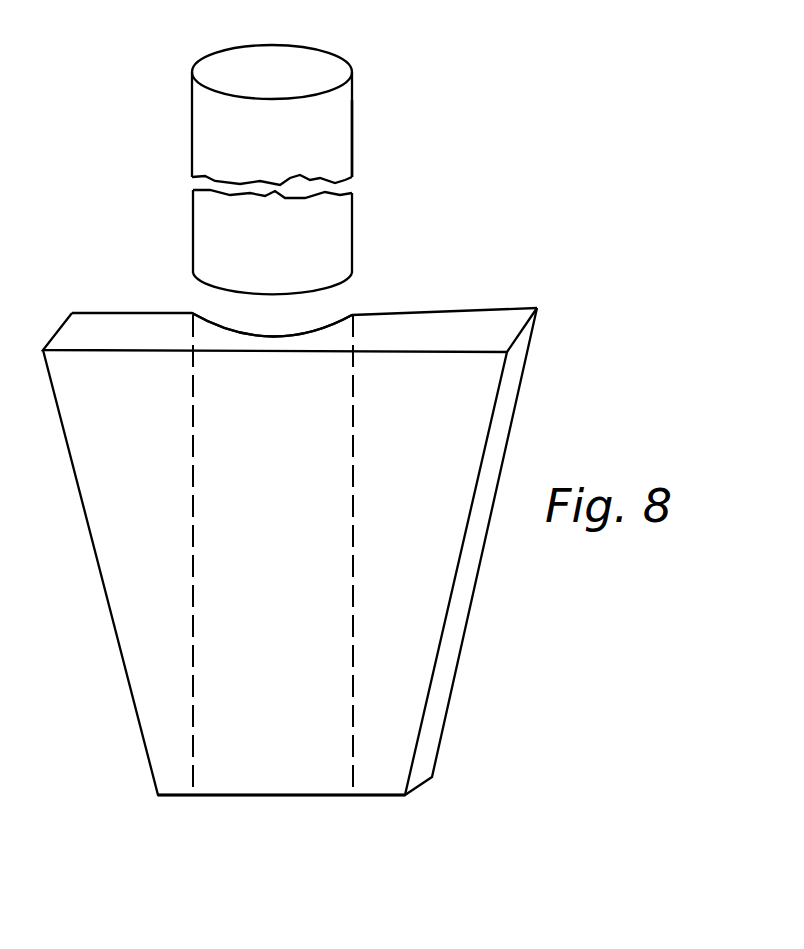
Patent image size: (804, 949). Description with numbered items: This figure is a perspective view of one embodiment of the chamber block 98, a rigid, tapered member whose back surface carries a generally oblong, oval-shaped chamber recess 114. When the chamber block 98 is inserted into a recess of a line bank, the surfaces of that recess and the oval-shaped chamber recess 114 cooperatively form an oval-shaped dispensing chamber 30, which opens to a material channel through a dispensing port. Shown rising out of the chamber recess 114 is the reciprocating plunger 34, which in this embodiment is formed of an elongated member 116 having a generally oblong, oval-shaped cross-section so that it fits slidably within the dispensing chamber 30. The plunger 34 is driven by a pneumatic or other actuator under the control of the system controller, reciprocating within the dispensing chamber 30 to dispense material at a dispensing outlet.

The chamber block 98 is at (428, 428).
The chamber recess 114 is at (202, 318).
The elongated member 116 is at (270, 143).
The reciprocating plunger 34 is at (360, 139).
The dispensing chamber 30 is at (207, 796).